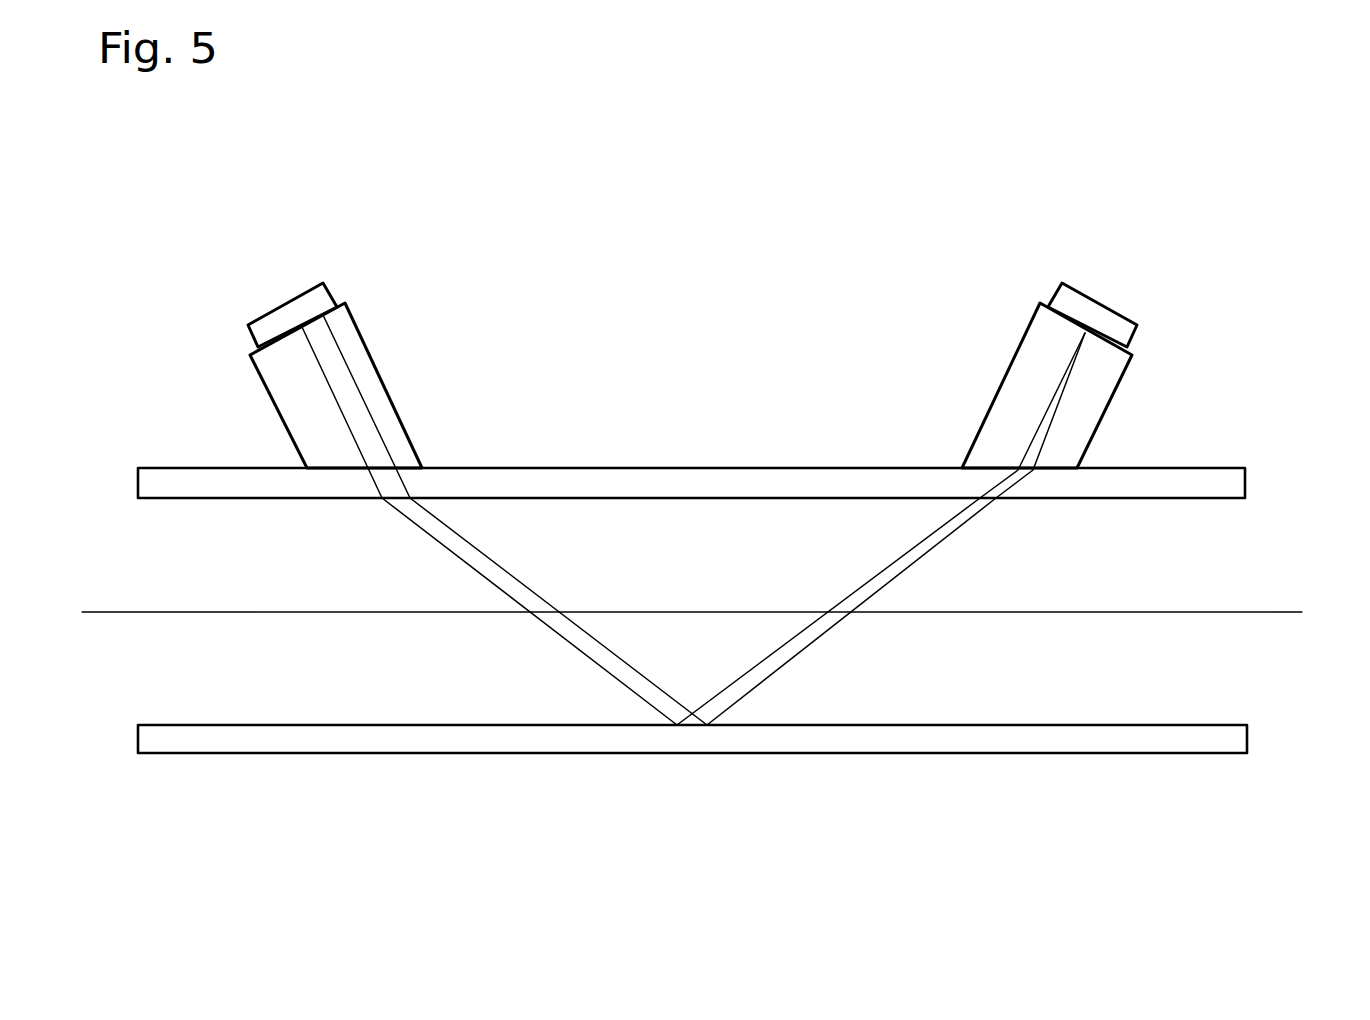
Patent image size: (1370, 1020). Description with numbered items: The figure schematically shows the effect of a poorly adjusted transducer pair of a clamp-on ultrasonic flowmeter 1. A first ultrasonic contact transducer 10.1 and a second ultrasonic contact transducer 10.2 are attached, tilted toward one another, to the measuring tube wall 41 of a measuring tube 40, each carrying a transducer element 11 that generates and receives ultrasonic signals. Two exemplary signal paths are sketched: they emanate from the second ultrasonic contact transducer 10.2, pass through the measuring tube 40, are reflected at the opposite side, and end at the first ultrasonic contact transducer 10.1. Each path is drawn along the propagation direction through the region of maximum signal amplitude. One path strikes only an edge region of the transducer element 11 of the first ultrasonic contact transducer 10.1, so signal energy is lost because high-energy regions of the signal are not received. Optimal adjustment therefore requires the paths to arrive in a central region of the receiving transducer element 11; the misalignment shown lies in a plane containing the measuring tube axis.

The clamp-on ultrasonic flowmeter 1 is at (1132, 242).
The first ultrasonic contact transducer 10.1 is at (395, 325).
The second ultrasonic contact transducer 10.2 is at (990, 340).
The transducer element 11 is at (280, 340).
The measuring tube 40 is at (1173, 738).
The measuring tube wall 41 is at (1275, 610).